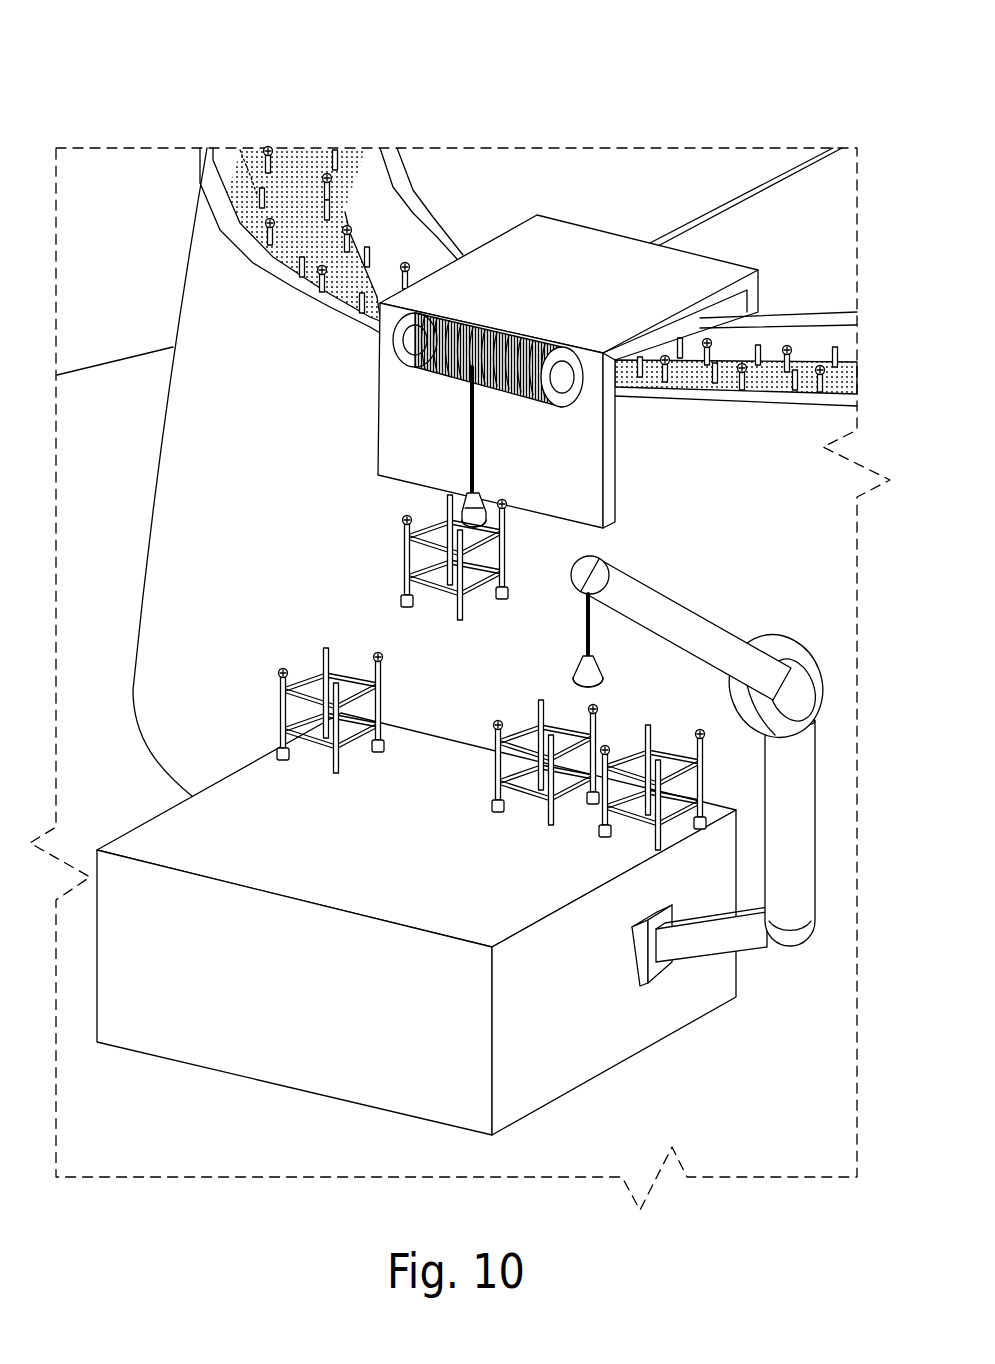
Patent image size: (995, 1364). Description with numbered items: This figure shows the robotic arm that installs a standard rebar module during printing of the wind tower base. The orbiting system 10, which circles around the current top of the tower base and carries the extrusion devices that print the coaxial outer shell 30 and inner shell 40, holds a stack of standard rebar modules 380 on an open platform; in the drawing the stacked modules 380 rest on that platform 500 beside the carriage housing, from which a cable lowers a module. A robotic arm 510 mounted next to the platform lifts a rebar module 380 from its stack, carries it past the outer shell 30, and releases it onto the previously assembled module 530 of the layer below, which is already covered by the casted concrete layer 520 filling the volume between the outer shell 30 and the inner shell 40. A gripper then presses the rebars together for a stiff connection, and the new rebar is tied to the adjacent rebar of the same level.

The orbiting carriage 10 is at (575, 273).
The outer shell 30 is at (765, 395).
The inner shell 40 is at (838, 322).
The standard rebar module 380 is at (298, 636).
The table 500 is at (404, 778).
The robotic arm 510 is at (767, 942).
The casted concrete layer 520 is at (307, 152).
The previously assembled module 530 is at (347, 222).